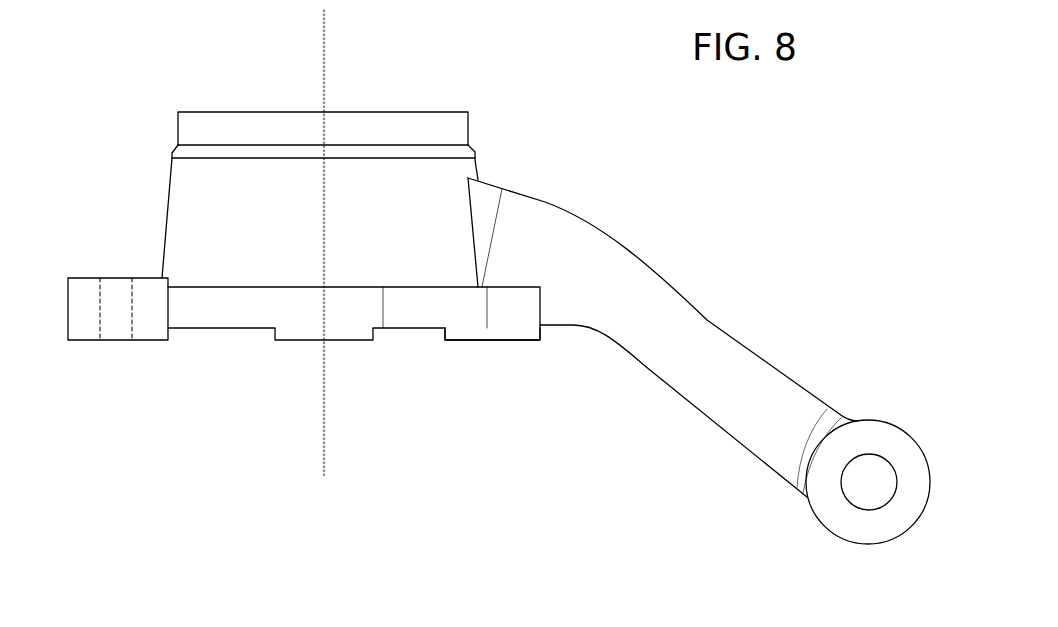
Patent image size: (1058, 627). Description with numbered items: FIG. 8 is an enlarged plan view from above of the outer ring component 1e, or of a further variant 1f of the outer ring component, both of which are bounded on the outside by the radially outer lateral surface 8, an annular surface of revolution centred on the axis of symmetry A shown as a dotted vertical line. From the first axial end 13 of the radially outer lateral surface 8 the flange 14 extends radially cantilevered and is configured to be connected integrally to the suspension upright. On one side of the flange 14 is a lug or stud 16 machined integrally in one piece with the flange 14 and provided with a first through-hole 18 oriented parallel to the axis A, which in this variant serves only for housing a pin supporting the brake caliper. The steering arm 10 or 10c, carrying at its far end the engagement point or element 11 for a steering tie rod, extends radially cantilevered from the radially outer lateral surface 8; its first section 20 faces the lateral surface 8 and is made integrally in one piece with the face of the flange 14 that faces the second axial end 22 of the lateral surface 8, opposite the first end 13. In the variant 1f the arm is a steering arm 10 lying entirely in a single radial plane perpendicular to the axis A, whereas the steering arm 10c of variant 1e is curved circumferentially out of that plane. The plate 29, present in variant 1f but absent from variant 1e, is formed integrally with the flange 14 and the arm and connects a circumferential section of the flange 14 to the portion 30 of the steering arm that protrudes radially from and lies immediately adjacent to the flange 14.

The radially outer lateral surface 8 is at (160, 215).
The second axial end 22 is at (411, 104).
The first section 20 is at (491, 190).
The portion of the steering arm 30 is at (550, 235).
The steering arm 10c is at (663, 330).
The steering arm 10 is at (663, 330).
The engagement point or element 11 is at (913, 423).
The first axial end 13 is at (354, 320).
The flange 14 is at (407, 317).
The plate 29 is at (508, 348).
The lugs or studs 16 is at (117, 361).
The first through-hole 18 is at (106, 322).
The outer ring component variant 1e is at (500, 465).
The outer ring component variant 1f is at (461, 418).
The axis of symmetry A is at (323, 448).